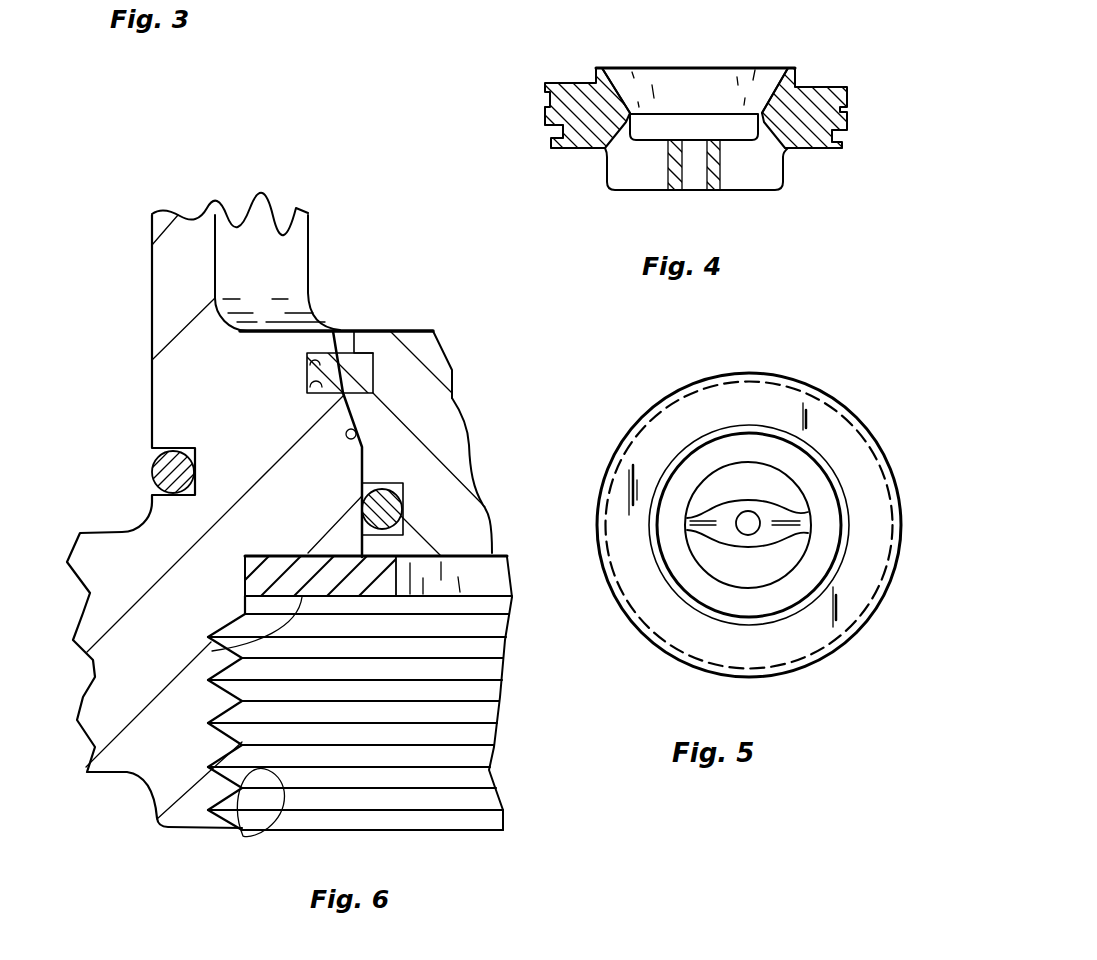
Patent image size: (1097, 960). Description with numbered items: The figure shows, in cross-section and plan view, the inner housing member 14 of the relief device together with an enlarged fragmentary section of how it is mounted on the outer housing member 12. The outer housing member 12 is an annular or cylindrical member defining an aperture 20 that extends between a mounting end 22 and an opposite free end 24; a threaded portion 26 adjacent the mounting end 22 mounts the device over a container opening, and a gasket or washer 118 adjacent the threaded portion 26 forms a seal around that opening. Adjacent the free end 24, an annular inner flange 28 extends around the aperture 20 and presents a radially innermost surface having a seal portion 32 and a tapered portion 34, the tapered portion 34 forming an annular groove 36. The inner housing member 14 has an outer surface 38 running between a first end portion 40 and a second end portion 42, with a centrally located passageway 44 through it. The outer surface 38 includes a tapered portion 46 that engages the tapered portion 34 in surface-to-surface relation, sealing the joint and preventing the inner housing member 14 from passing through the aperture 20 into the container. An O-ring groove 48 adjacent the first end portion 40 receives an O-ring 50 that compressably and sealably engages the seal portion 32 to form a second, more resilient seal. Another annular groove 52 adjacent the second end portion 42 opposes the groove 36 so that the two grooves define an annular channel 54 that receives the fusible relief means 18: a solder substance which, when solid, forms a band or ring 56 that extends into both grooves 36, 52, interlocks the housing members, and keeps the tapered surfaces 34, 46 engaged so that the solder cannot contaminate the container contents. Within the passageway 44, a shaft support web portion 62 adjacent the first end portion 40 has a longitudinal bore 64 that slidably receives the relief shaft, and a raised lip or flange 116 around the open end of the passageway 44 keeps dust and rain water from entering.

In FIG. 6, the outer housing member 12 is at (516, 818).
In FIG. 4, the inner housing member 14 is at (818, 158).
In FIG. 5, the inner housing member 14 is at (795, 672).
In FIG. 6, the inner housing member 14 is at (494, 566).
In FIG. 6, the fusible relief means 18 is at (348, 328).
In FIG. 6, the aperture 20 is at (245, 578).
In FIG. 6, the mounting end 22 is at (160, 826).
In FIG. 6, the free end 24 is at (152, 328).
In FIG. 6, the threaded portion 26 is at (244, 834).
In FIG. 6, the inner flange 28 is at (327, 513).
In FIG. 6, the seal portion 32 is at (368, 473).
In FIG. 6, the tapered portion 34 is at (340, 328).
In FIG. 6, the annular groove 36 is at (307, 357).
In FIG. 4, the outer surface 38 is at (547, 136).
In FIG. 5, the outer surface 38 is at (893, 475).
In FIG. 6, the outer surface 38 is at (350, 347).
In FIG. 4, the first end portion 40 is at (565, 150).
In FIG. 5, the first end portion 40 is at (857, 572).
In FIG. 6, the first end portion 40 is at (492, 556).
In FIG. 4, the second end portion 42 is at (570, 82).
In FIG. 5, the second end portion 42 is at (840, 448).
In FIG. 6, the second end portion 42 is at (453, 375).
In FIG. 4, the passageway 44 is at (630, 92).
In FIG. 5, the passageway 44 is at (690, 497).
In FIG. 4, the tapered portion 46 is at (545, 113).
In FIG. 6, the tapered portion 46 is at (356, 429).
In FIG. 4, the O-ring groove 48 is at (845, 138).
In FIG. 6, the O-ring groove 48 is at (400, 538).
In FIG. 6, the O-ring 50 is at (385, 508).
In FIG. 4, the annular groove 52 is at (848, 100).
In FIG. 6, the annular groove 52 is at (438, 360).
In FIG. 6, the annular channel 54 is at (307, 385).
In FIG. 6, the band or ring of solder 56 is at (345, 375).
In FIG. 4, the shaft support web portion 62 is at (752, 192).
In FIG. 5, the shaft support web portion 62 is at (700, 533).
In FIG. 4, the longitudinal bore 64 is at (685, 174).
In FIG. 5, the longitudinal bore 64 is at (747, 528).
In FIG. 4, the raised lip or flange 116 is at (800, 77).
In FIG. 5, the raised lip or flange 116 is at (780, 427).
In FIG. 6, the gasket or washer 118 is at (213, 643).